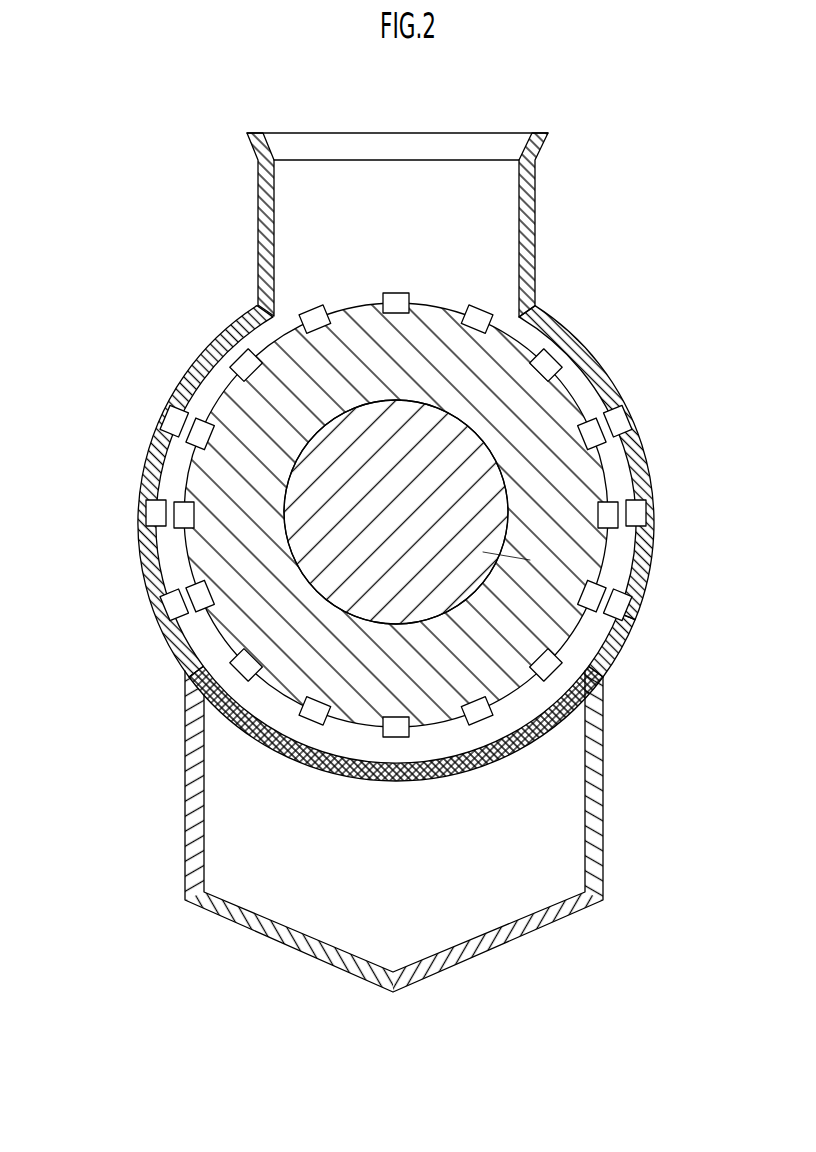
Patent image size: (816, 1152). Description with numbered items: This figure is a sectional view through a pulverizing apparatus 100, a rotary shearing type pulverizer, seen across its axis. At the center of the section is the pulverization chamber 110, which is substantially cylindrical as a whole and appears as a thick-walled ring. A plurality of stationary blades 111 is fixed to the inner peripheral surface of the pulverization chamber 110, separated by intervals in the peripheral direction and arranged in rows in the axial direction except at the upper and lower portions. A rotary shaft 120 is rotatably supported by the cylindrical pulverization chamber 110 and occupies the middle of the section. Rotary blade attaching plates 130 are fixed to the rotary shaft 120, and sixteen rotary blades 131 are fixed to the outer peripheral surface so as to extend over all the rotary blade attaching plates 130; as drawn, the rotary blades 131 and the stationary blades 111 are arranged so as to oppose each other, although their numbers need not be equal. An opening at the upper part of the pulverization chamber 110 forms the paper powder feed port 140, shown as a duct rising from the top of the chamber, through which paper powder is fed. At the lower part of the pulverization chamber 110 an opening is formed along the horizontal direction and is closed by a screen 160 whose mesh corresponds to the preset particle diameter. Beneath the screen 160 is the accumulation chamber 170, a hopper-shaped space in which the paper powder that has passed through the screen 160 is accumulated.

The pulverizing apparatus 100 is at (597, 257).
The pulverization chamber 110 is at (595, 348).
The stationary blades 111 is at (150, 600).
The rotary shaft 120 is at (612, 646).
The rotary blade attaching plates 130 is at (175, 380).
The rotary blades 131 is at (308, 310).
The paper powder feed port 140 is at (258, 206).
The screen 160 is at (533, 740).
The accumulation chamber 170 is at (603, 805).